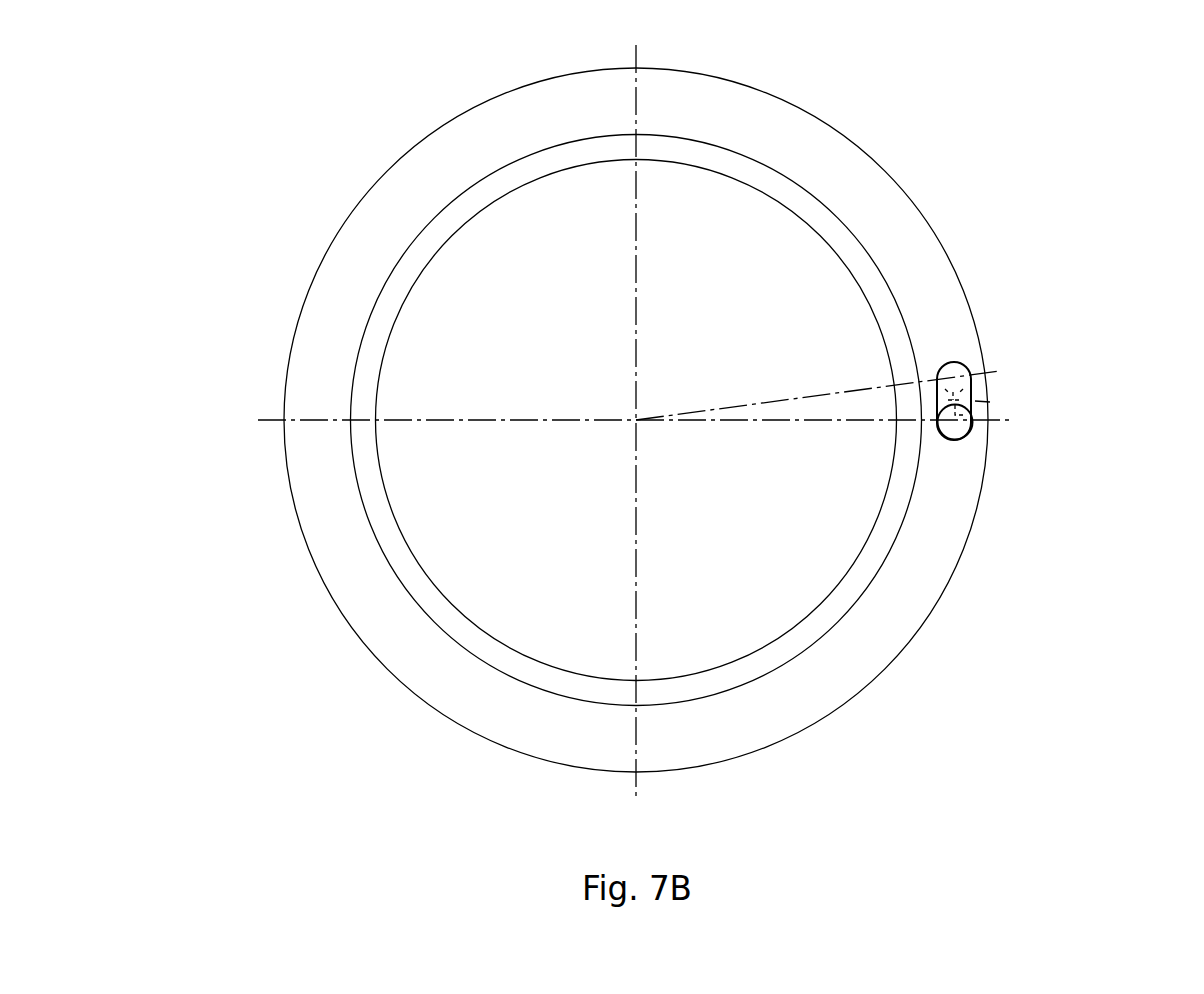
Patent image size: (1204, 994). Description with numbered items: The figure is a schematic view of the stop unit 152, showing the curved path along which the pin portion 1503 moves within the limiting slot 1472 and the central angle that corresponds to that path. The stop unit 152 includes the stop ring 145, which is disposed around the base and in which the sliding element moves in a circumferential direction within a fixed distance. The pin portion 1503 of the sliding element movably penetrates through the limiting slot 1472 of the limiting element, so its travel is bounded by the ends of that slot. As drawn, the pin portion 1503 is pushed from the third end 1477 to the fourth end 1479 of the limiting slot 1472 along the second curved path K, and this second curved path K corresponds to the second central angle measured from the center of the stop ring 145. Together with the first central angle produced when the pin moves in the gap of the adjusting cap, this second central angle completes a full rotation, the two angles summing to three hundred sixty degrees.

The stop unit 152 is at (302, 157).
The stop ring 145 is at (917, 257).
The third end 1477 is at (702, 420).
The fourth end 1479 is at (955, 362).
The limiting slot 1472 is at (967, 395).
The pin portion 1503 is at (958, 438).
The second curved path K is at (990, 402).